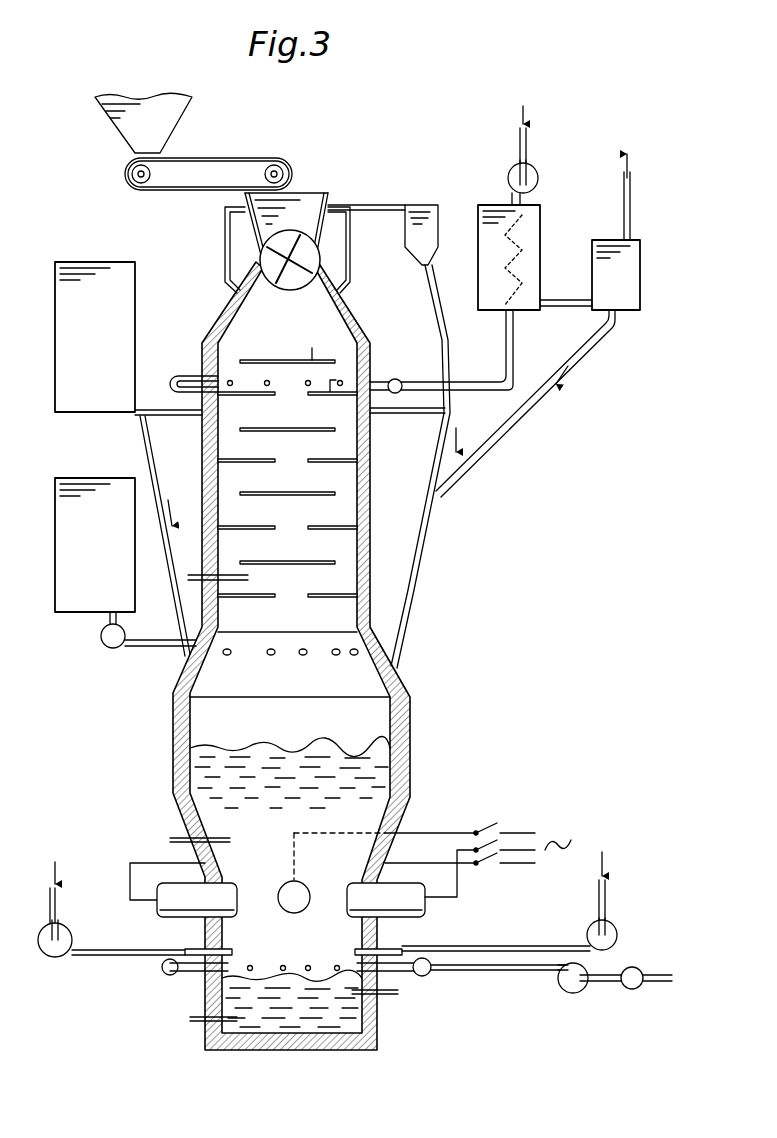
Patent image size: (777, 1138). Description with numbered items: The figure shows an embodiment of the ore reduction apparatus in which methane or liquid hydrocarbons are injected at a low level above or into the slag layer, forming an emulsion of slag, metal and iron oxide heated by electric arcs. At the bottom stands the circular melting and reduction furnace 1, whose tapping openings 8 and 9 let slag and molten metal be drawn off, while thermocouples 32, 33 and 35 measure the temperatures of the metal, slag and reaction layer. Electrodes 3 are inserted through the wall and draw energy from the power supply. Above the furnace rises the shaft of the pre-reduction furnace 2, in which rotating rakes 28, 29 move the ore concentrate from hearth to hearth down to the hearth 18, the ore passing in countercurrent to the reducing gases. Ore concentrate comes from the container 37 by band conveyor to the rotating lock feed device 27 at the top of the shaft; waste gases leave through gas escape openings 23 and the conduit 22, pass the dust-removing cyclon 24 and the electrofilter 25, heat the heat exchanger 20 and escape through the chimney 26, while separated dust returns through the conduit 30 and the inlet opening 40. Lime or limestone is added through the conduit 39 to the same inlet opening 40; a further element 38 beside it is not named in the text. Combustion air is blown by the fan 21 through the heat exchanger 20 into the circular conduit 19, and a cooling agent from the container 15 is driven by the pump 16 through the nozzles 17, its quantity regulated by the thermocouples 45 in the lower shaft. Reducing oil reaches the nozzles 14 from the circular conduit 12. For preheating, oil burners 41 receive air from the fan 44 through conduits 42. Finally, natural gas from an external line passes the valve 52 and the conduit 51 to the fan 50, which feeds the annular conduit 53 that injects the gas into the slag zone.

The melting and reduction furnace 1 is at (296, 1050).
The rotating furnace 2 is at (370, 476).
The electrodes 3 is at (450, 905).
The tapping opening 8 is at (208, 990).
The tapping opening 9 is at (380, 1020).
The circular conduit 12 is at (428, 977).
The nozzles 14 is at (195, 973).
The container 15 is at (95, 545).
The pump 16 is at (100, 640).
The nozzles 17 is at (227, 655).
The hearth 18 is at (295, 560).
The circular conduit 19 is at (395, 380).
The heat exchanger 20 is at (535, 257).
The fan 21 is at (508, 176).
The conduit 22 is at (395, 210).
The gas escape openings 23 is at (252, 310).
The dust-removing cyclon 24 is at (421, 235).
The electrofilter 25 is at (616, 275).
The chimney 26 is at (623, 220).
The lock feed device 27 is at (290, 290).
The rotating rake 28 is at (330, 384).
The rotating rake 29 is at (312, 348).
The conduit 30 is at (450, 345).
The thermocouple 32 is at (196, 1023).
The thermocouple 33 is at (375, 995).
The thermocouple 35 is at (182, 838).
The container 37 is at (193, 141).
The storage tank 38 is at (95, 337).
The conduit 39 is at (160, 417).
The inlet opening 40 is at (203, 683).
The oil burners 41 is at (192, 948).
The conduits 42 is at (492, 946).
The fan 44 is at (618, 945).
The thermocouples 45 is at (196, 572).
The fan 50 is at (574, 993).
The conduit 51 is at (610, 985).
The valve 52 is at (641, 987).
The annular conduit 53 is at (500, 972).